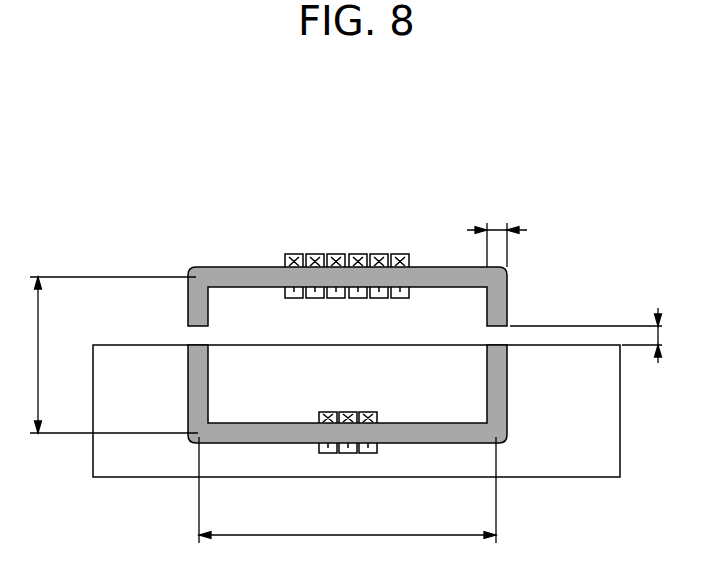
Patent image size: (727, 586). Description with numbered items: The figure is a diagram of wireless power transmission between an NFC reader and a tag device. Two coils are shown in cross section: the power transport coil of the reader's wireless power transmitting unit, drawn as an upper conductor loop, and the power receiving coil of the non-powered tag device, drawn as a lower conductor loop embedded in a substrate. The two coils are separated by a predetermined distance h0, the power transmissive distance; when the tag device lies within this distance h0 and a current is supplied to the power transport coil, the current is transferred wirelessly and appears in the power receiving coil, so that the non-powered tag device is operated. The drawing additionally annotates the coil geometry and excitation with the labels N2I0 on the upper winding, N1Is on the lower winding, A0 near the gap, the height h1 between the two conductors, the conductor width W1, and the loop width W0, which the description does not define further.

The secondary winding ampere-turns (N2 I0) N2I0 is at (347, 259).
The air gap cross-section A0 is at (328, 304).
The primary winding ampere-turns (N1 Is) N1Is is at (348, 414).
The height h1 between conductor centers h1 is at (103, 355).
The predetermined distance h0 is at (600, 335).
The conductor width w1 W1 is at (497, 234).
The loop width w0 W0 is at (347, 490).